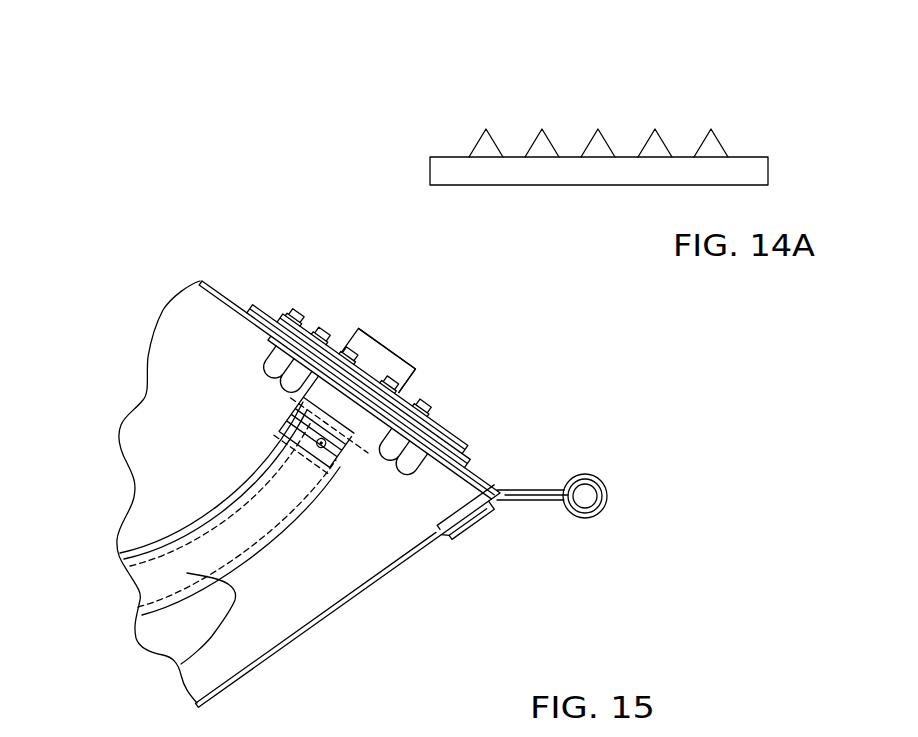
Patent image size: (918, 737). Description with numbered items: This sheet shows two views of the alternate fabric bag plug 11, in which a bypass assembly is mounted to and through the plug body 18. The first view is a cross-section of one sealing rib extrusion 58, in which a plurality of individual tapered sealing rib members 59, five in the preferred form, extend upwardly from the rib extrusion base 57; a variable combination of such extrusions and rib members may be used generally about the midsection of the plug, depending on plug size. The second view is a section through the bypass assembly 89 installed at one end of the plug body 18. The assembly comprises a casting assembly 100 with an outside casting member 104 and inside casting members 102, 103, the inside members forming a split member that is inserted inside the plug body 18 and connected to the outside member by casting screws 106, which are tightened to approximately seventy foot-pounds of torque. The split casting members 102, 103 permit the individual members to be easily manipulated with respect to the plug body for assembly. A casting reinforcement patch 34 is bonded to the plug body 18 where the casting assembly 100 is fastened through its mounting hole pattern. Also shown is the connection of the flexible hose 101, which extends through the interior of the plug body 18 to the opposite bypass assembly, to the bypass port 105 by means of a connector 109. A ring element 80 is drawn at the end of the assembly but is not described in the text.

In FIG. 14A, the rib extrusion base 57 is at (760, 157).
In FIG. 14A, the sealing rib extrusion 58 is at (590, 117).
In FIG. 14A, the sealing rib members 59 is at (472, 145).
In FIG. 15, the plug 11 is at (159, 282).
In FIG. 15, the plug body 18 is at (213, 282).
In FIG. 15, the casting reinforcement patch 34 is at (468, 460).
In FIG. 15, the pull ring 80 is at (506, 526).
In FIG. 15, the bypass assembly 89 is at (358, 313).
In FIG. 15, the casting assembly 100 is at (419, 384).
In FIG. 15, the flexible hose 101 is at (180, 667).
In FIG. 15, the inside casting member 102 is at (420, 458).
In FIG. 15, the inside casting member 103 is at (270, 357).
In FIG. 15, the outside casting member 104 is at (273, 303).
In FIG. 15, the bypass port 105 is at (383, 358).
In FIG. 15, the casting screws 106 is at (318, 315).
In FIG. 15, the connector 109 is at (295, 418).